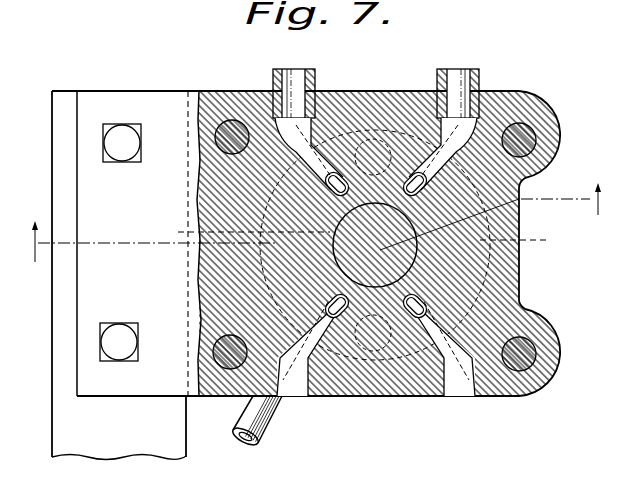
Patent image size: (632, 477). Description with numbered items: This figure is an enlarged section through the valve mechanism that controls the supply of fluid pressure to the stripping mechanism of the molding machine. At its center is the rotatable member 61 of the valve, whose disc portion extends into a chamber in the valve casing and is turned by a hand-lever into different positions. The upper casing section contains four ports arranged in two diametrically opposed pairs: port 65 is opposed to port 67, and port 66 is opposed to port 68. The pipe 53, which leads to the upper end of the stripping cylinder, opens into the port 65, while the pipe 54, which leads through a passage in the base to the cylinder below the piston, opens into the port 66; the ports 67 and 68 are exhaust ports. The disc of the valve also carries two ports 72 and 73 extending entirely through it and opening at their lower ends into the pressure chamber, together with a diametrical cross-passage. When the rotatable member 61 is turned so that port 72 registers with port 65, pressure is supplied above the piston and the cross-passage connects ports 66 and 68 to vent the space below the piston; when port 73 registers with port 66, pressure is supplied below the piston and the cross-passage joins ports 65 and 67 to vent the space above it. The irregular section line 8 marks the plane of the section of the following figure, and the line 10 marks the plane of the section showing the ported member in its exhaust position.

The section line 8— 8 is at (317, 222).
The section line 10— 10 is at (376, 252).
The pipe 53 is at (273, 78).
The pipe 54 is at (480, 77).
The rotatable member of the valve 61 is at (416, 254).
The port 65 is at (315, 156).
The port 66 is at (438, 143).
The exhaust port 67 is at (433, 324).
The exhaust port 68 is at (323, 340).
The port 72 is at (238, 229).
The port 73 is at (529, 243).